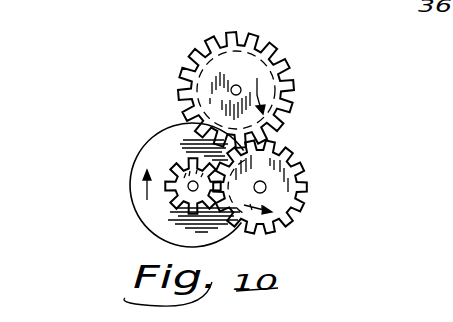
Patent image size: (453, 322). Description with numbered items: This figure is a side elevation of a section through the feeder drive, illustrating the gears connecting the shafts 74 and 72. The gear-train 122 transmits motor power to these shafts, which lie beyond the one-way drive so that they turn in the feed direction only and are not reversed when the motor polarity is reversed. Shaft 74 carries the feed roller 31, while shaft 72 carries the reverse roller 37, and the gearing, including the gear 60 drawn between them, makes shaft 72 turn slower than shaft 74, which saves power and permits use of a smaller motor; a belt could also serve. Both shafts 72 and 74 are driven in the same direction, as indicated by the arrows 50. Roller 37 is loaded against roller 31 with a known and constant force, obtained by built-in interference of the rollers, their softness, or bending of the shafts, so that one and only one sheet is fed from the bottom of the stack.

The roller 31 is at (162, 143).
The roller 37 is at (195, 49).
The arrow 50 is at (140, 184).
The idler gear 60 is at (258, 82).
The shaft 72 is at (238, 88).
The shaft 74 is at (190, 188).
The gear-train 122 is at (304, 142).